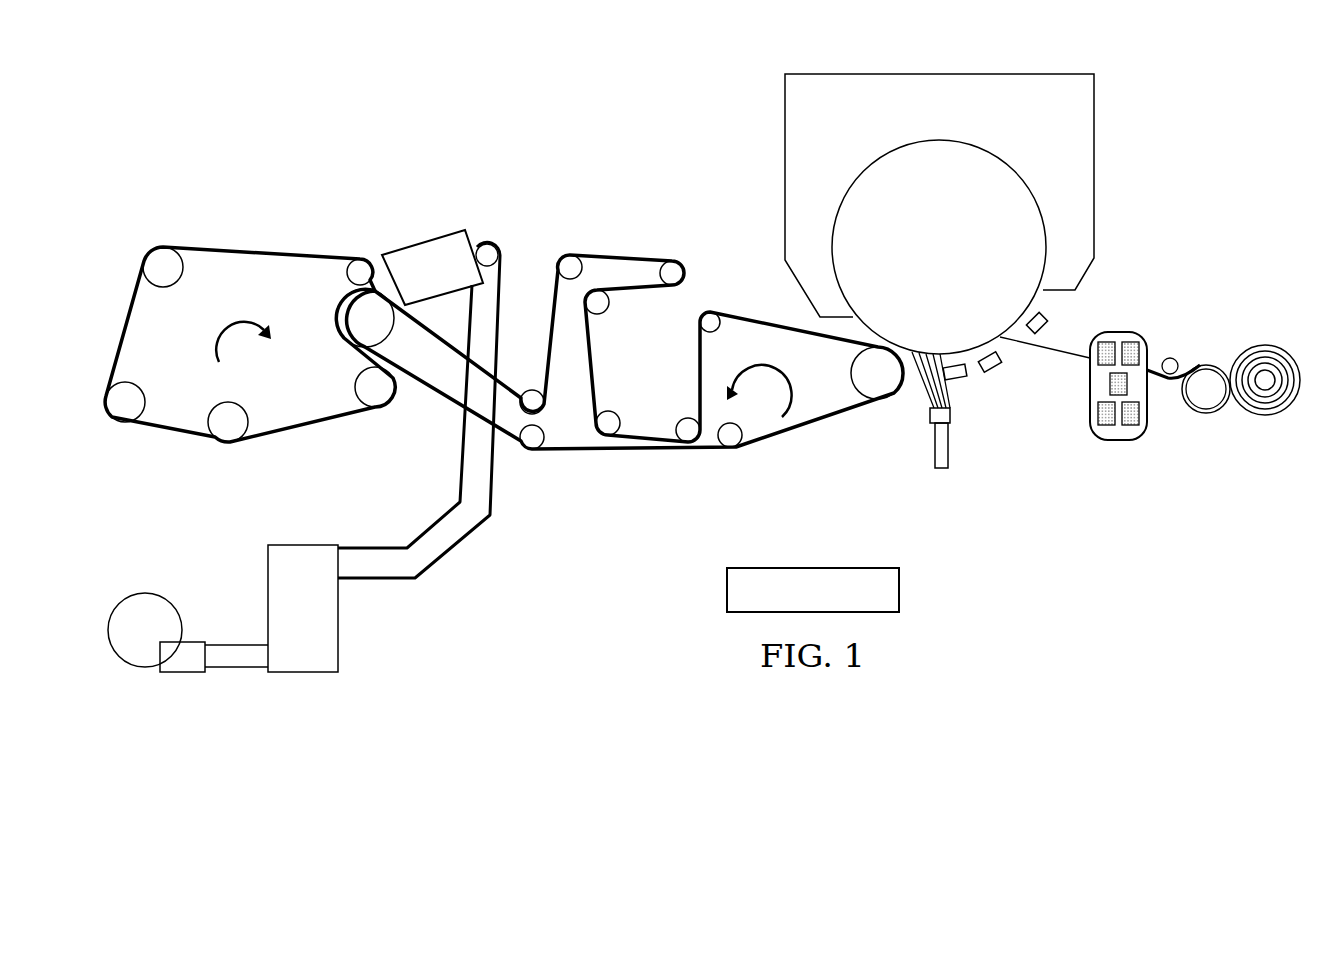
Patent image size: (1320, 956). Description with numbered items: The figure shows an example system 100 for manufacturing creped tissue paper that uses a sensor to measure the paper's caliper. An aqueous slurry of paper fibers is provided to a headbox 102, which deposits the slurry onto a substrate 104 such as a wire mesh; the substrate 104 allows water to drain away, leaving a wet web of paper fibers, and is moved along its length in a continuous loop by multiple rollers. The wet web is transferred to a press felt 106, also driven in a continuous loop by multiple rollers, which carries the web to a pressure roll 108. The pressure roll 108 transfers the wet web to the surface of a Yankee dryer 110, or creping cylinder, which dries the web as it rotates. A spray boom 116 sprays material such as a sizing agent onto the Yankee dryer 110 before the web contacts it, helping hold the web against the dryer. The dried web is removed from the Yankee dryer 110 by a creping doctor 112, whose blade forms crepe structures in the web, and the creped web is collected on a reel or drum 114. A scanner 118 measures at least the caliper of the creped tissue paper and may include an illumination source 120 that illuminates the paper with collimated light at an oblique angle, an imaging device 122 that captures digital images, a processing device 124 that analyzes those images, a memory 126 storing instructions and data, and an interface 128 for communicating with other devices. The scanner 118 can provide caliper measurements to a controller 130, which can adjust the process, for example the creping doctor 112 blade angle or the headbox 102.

The system 100 is at (505, 135).
The headbox 102 is at (428, 237).
The substrate 104 is at (264, 252).
The press felt 106 is at (628, 453).
The pressure roll 108 is at (853, 374).
The Yankee dryer 110 is at (961, 264).
The creping doctor 112 is at (962, 379).
The reel or drum 114 is at (1265, 416).
The spray boom 116 is at (940, 469).
The scanner 118 is at (1082, 407).
The illumination source 120 is at (1105, 342).
The imaging device 122 is at (1130, 342).
The processing device 124 is at (1110, 385).
The memory 126 is at (1105, 425).
The interface 128 is at (1130, 425).
The controller 130 is at (899, 590).